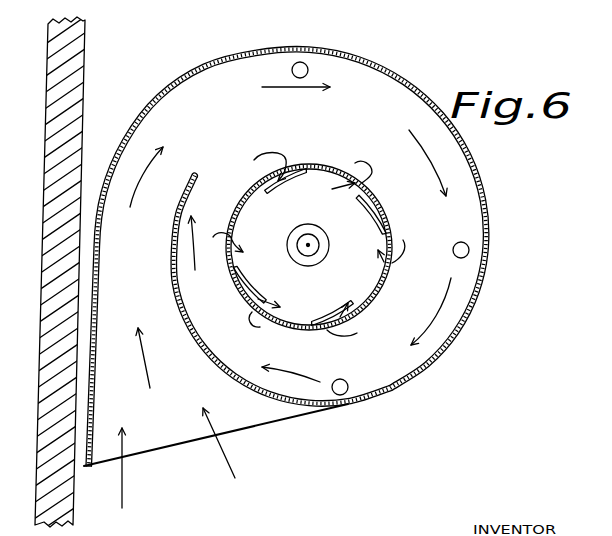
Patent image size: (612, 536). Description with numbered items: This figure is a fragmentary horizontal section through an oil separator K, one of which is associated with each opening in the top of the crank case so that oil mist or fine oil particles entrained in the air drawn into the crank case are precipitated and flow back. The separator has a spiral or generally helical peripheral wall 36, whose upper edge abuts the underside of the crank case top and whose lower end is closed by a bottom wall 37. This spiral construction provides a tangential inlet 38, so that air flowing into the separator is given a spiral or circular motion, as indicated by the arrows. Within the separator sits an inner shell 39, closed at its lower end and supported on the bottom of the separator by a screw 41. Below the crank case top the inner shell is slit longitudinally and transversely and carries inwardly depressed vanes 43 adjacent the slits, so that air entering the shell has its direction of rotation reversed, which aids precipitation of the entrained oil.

The peripheral wall 36 is at (200, 64).
The bottom wall 37 is at (383, 373).
The tangential inlet 38 is at (174, 407).
The inner shell 39 is at (396, 227).
The screw 41 is at (309, 246).
The vanes 43 is at (296, 170).
The oil separator K is at (403, 75).